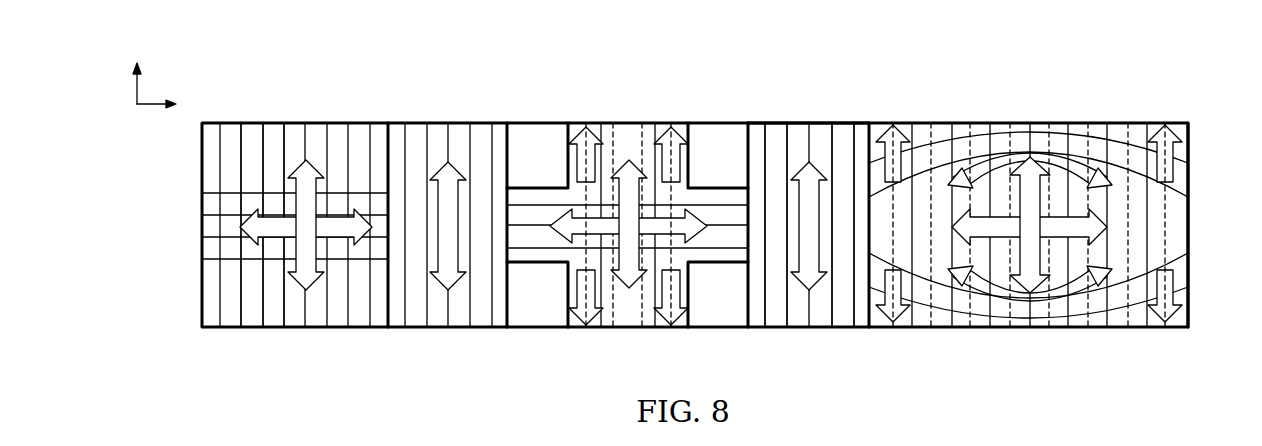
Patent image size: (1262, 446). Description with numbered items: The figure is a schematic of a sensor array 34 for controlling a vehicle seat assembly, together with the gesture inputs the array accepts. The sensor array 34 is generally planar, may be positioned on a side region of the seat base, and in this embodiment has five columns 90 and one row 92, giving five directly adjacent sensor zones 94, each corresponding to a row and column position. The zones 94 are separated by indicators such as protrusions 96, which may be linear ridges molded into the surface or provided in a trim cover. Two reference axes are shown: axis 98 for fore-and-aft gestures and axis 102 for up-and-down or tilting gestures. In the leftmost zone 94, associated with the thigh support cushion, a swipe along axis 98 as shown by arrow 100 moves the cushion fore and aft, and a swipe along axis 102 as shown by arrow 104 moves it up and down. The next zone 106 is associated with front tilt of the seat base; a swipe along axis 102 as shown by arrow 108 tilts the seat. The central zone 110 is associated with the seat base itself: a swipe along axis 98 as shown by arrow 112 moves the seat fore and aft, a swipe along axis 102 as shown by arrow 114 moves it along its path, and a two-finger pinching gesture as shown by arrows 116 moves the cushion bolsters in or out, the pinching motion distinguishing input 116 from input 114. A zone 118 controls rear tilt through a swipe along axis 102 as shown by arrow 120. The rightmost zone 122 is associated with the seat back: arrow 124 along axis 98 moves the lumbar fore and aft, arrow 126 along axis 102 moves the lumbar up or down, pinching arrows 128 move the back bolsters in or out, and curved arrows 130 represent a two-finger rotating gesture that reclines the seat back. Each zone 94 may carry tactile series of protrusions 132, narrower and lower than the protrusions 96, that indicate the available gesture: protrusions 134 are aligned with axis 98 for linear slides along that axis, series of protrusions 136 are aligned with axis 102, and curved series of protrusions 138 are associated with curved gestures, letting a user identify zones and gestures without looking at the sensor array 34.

The sensor array 34 is at (833, 62).
The columns 90 is at (832, 123).
The row 92 is at (1189, 178).
The sensor zones 94 is at (417, 310).
The protrusions 96 is at (220, 327).
The axis 98 is at (137, 105).
The arrow 100 is at (275, 228).
The axis 102 is at (138, 90).
The arrow 104 is at (318, 172).
The zone 106 is at (490, 326).
The arrow 108 is at (452, 226).
The zone 110 is at (679, 122).
The arrow 112 is at (702, 214).
The arrow 114 is at (633, 160).
The arrows 116 is at (665, 315).
The zone 118 is at (774, 136).
The arrow 120 is at (823, 300).
The zone 122 is at (945, 173).
The arrow 124 is at (1098, 213).
The arrow 126 is at (1046, 150).
The arrows 128 is at (904, 318).
The arrows 130 is at (1063, 133).
The series of protrusions 132 is at (243, 148).
The protrusions 134 is at (285, 158).
The series of protrusions 136 is at (545, 248).
The series of protrusions 138 is at (948, 162).